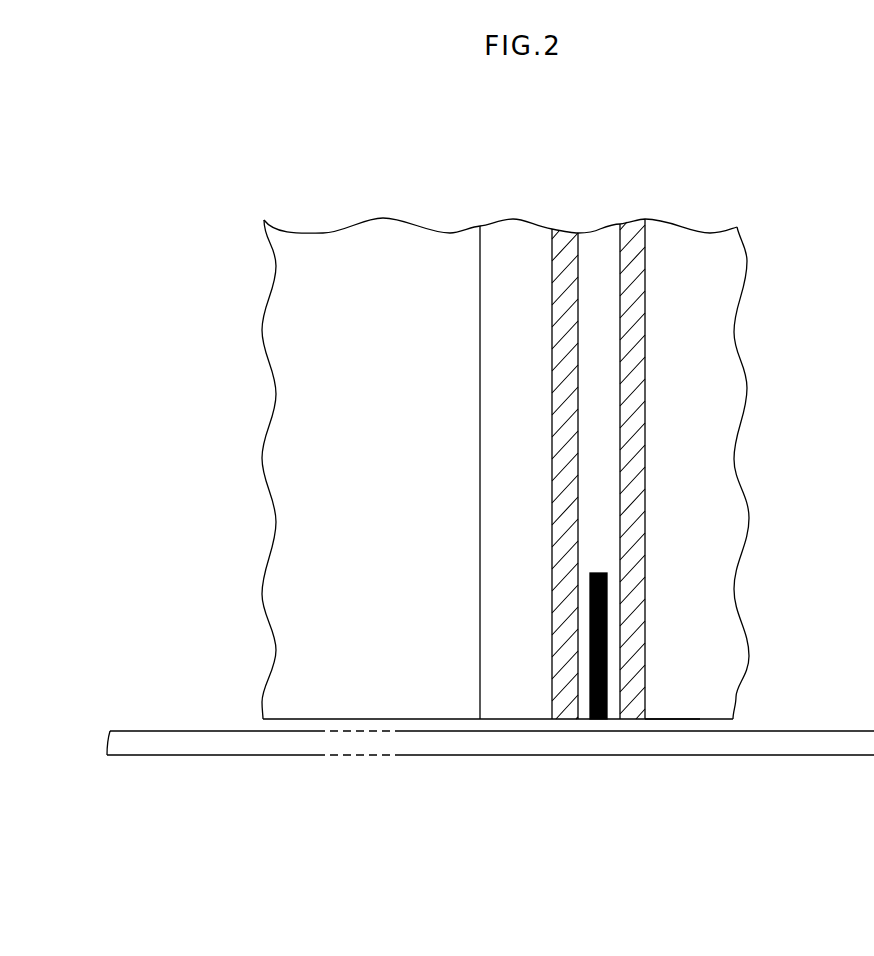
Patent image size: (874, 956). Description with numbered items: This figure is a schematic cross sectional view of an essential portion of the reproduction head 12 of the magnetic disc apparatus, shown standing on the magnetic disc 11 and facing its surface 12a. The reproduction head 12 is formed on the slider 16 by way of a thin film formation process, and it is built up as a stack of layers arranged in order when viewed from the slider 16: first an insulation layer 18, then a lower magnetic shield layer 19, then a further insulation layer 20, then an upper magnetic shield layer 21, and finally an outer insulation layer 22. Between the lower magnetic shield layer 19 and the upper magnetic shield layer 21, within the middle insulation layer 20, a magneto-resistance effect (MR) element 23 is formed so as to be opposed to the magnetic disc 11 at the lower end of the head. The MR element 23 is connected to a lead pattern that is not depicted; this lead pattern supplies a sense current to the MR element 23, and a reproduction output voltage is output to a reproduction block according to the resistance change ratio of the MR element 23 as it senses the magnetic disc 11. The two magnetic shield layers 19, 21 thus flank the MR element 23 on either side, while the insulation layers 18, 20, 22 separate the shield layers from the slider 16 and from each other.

The magnetic disc 11 is at (188, 744).
The reproduction head 12 is at (737, 186).
The bottom surface of head 12a is at (668, 720).
The slider 16 is at (383, 223).
The insulation layer 18 is at (510, 223).
The lower magnetic shield layer 19 is at (552, 703).
The insulation layer 20 is at (600, 231).
The upper magnetic shield layer 21 is at (633, 713).
The insulation layer 22 is at (742, 526).
The magneto-resistance effect (MR) element 23 is at (599, 721).